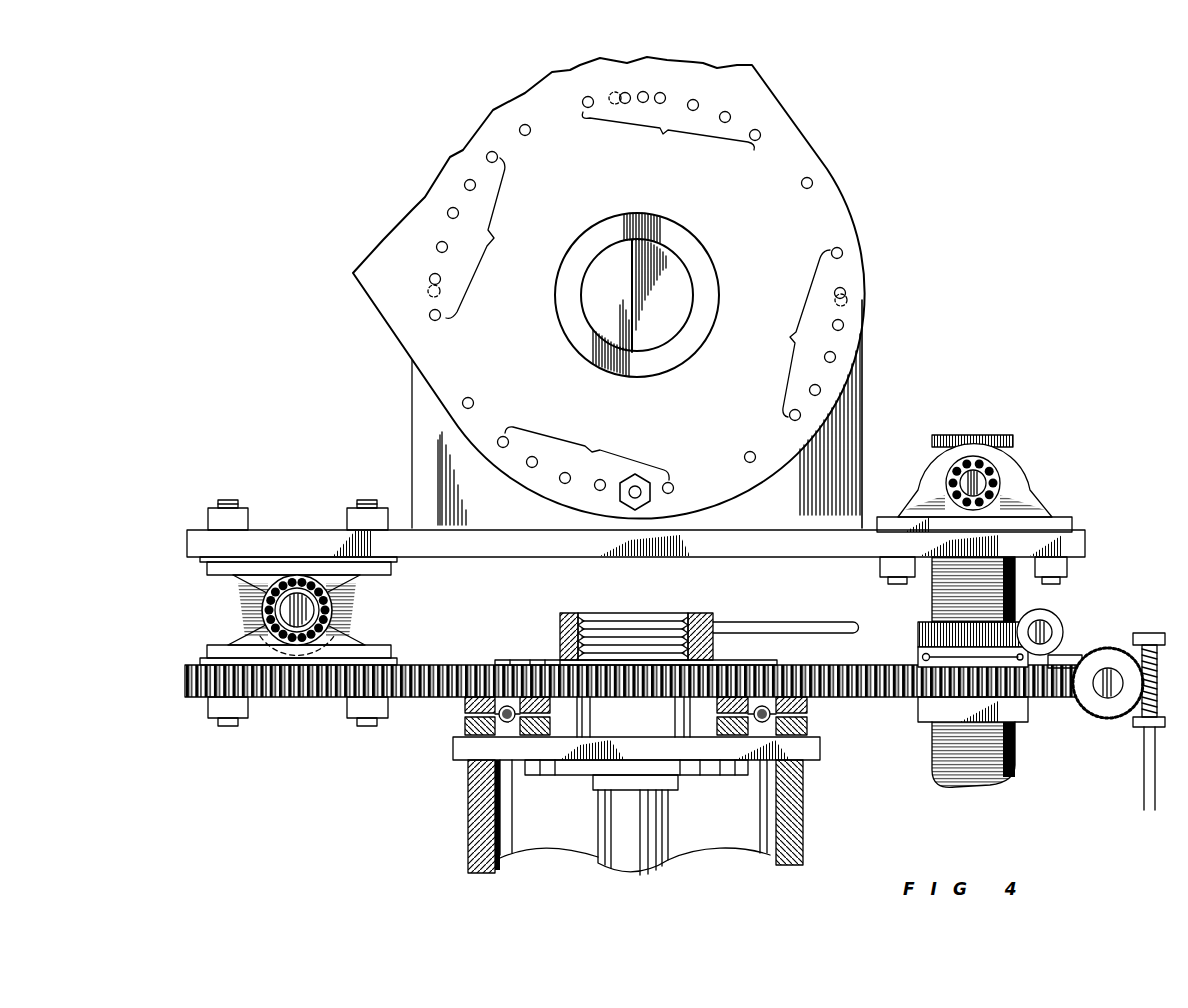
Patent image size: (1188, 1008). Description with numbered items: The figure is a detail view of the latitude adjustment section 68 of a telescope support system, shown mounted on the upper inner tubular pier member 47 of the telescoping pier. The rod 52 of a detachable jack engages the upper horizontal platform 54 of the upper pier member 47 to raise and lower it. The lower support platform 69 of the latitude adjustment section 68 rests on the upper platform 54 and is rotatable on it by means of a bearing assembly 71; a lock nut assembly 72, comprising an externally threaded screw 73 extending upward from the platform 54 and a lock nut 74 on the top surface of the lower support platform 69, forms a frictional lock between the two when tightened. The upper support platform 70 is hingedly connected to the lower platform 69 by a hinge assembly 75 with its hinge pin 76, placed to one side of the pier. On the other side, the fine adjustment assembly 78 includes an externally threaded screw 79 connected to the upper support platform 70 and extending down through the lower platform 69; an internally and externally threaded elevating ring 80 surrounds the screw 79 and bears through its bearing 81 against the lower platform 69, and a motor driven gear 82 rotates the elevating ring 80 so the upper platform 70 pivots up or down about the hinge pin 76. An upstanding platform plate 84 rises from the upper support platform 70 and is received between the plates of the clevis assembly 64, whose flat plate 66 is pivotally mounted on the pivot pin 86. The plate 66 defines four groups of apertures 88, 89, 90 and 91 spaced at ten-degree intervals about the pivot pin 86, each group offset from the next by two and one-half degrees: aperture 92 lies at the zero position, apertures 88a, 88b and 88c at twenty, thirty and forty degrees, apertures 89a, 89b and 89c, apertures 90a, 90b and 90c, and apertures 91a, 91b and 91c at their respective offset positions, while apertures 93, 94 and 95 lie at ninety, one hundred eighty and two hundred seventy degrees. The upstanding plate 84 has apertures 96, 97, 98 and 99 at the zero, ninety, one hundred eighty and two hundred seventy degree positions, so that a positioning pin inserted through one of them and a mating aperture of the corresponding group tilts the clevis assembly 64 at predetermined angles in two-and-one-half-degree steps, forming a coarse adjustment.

The upper inner tubular pier member 47 is at (466, 853).
The rod 52 is at (600, 848).
The upper horizontal platform 54 is at (822, 752).
The clevis assembly 64 is at (366, 300).
The flat plate 66 is at (803, 152).
The latitude adjustment section 68 is at (271, 611).
The lower support platform 69 is at (427, 697).
The upper support platform 70 is at (484, 560).
The bearing assembly 71 is at (808, 725).
The lock nut assembly 72 is at (695, 613).
The externally threaded screw 73 is at (623, 615).
The lock nut 74 is at (561, 617).
The hinge assembly 75 is at (242, 619).
The hinge pin 76 is at (318, 616).
The fine adjustment assembly 78 is at (1072, 616).
The externally threaded screw 79 is at (933, 740).
The elevating ring 80 is at (920, 630).
The bearing 81 is at (917, 655).
The motor driven gear 82 is at (1037, 622).
The upstanding platform plate 84 is at (864, 436).
The pivot pin 86 is at (615, 298).
The group of apertures 88 is at (584, 453).
The aperture 88a is at (675, 488).
The aperture 88b is at (642, 500).
The aperture 88c is at (578, 469).
The group of apertures 89 is at (478, 235).
The aperture 89a is at (430, 315).
The aperture 89b is at (431, 275).
The aperture 89c is at (437, 246).
The group of apertures 90 is at (671, 127).
The aperture 90a is at (589, 96).
The aperture 90b is at (626, 92).
The aperture 90c is at (660, 93).
The group of apertures 91 is at (801, 335).
The aperture 91a is at (839, 248).
The aperture 91b is at (850, 278).
The aperture 91c is at (838, 320).
The aperture 92 is at (751, 451).
The aperture 93 is at (473, 399).
The aperture 94 is at (527, 136).
The aperture 95 is at (802, 184).
The aperture 96 is at (586, 472).
The aperture 97 is at (428, 289).
The aperture 98 is at (609, 94).
The aperture 99 is at (847, 302).